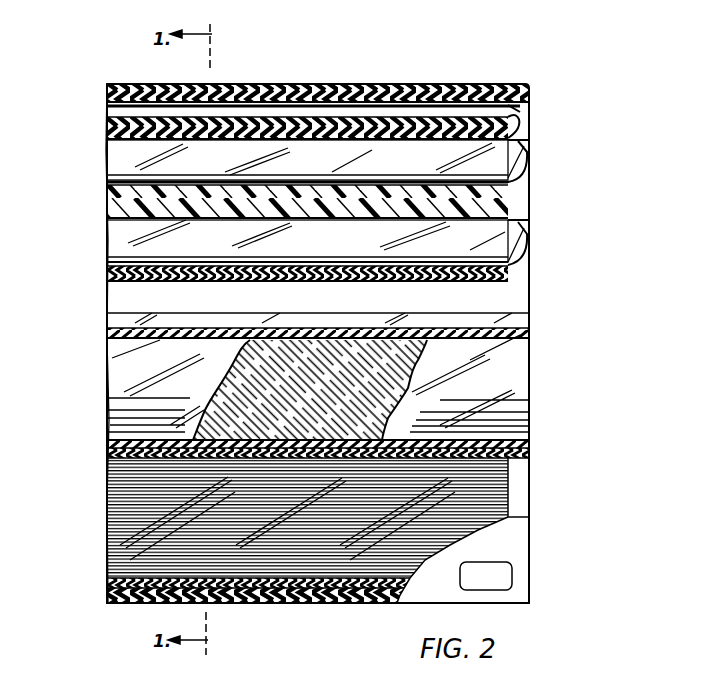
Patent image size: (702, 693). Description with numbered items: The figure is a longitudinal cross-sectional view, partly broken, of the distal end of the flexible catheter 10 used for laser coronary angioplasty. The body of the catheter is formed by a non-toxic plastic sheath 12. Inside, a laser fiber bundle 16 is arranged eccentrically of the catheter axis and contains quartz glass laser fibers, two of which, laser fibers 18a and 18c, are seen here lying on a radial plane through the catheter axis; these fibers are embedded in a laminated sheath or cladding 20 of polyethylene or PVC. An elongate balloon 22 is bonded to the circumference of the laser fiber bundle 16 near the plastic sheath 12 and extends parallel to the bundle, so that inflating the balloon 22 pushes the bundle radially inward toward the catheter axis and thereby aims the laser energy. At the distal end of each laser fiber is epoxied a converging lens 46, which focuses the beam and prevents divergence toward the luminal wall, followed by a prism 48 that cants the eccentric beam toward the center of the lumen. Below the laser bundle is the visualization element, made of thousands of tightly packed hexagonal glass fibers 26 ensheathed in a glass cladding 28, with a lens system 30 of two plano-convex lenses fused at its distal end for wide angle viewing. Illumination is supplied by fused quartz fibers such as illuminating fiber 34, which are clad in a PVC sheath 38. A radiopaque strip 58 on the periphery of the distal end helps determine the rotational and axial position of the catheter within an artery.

The flexible catheter 10 is at (455, 68).
The plastic sheath 12 is at (260, 92).
The elongate balloon 22 is at (402, 108).
The laser fiber 18a is at (408, 168).
The laminated sheath or cladding 20 is at (105, 204).
The laser fiber 18c is at (380, 247).
The laser fiber bundle 16 is at (437, 273).
The prism 48 is at (518, 140).
The converging lens 46 is at (528, 163).
The PVC sheath 38 is at (512, 333).
The illuminating fiber 34 is at (316, 400).
The glass fibers 26 is at (366, 578).
The glass cladding 28 is at (278, 594).
The lens system 30 is at (520, 485).
The radiopaque strip 58 is at (510, 575).